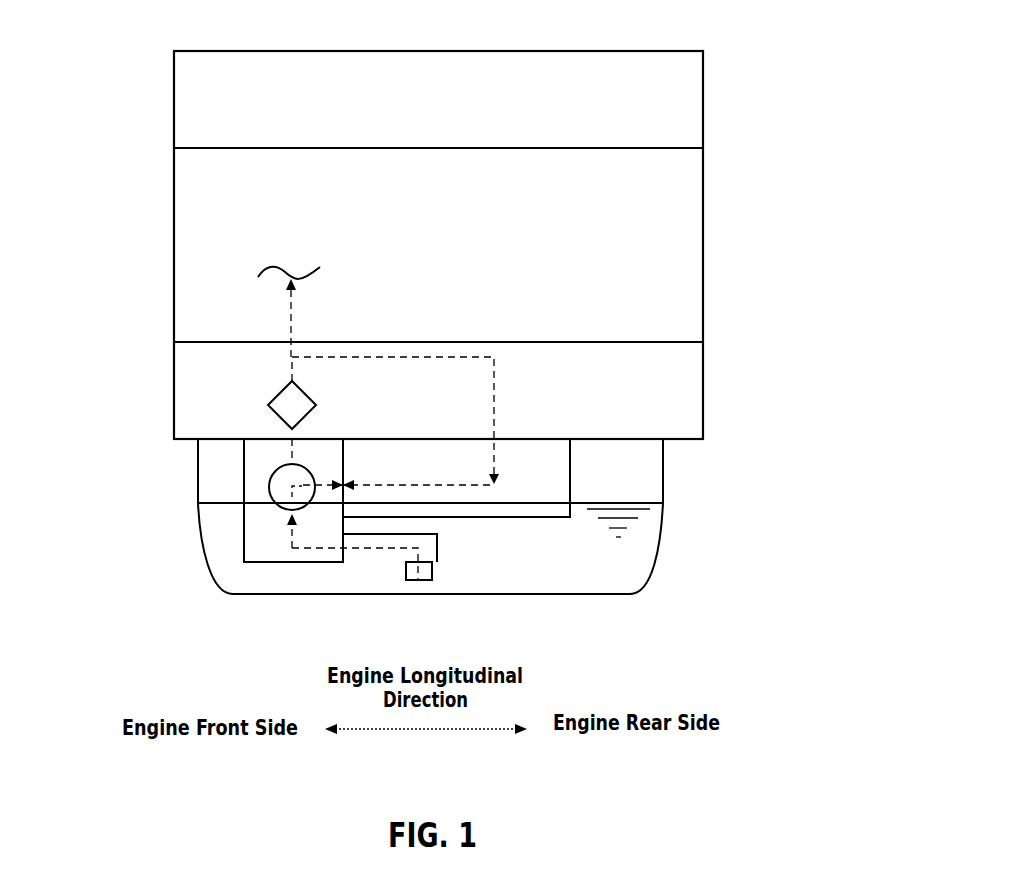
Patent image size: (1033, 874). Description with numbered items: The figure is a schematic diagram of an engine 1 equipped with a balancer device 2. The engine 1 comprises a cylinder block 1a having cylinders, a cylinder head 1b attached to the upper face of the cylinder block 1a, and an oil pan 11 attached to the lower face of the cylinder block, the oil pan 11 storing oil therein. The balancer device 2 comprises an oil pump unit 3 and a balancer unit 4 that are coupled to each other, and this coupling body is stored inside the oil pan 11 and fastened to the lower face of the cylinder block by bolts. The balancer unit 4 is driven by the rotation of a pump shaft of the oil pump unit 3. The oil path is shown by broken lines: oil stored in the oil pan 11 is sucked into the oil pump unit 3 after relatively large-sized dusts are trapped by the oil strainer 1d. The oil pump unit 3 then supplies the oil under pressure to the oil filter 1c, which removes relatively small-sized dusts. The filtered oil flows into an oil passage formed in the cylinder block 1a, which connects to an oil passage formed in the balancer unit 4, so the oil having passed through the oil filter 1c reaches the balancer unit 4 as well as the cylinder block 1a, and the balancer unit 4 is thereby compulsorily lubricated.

The engine 1 is at (780, 69).
The cylinder block 1a is at (264, 212).
The cylinder head 1b is at (270, 98).
The oil filter 1c is at (274, 392).
The oil strainer 1d is at (385, 562).
The balancer device 2 is at (598, 466).
The oil pump unit 3 is at (253, 482).
The balancer unit 4 is at (553, 480).
The oil pan 11 is at (660, 543).